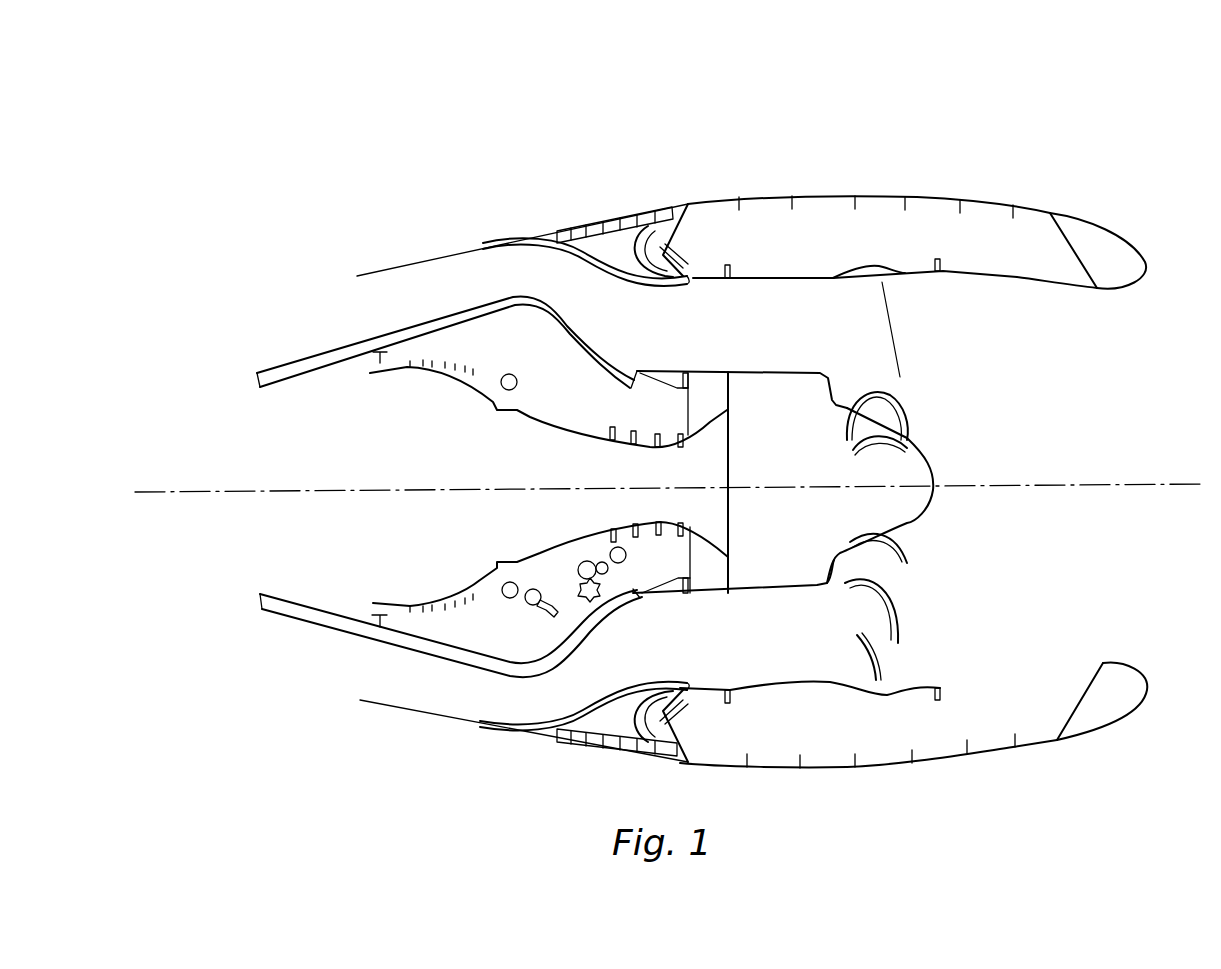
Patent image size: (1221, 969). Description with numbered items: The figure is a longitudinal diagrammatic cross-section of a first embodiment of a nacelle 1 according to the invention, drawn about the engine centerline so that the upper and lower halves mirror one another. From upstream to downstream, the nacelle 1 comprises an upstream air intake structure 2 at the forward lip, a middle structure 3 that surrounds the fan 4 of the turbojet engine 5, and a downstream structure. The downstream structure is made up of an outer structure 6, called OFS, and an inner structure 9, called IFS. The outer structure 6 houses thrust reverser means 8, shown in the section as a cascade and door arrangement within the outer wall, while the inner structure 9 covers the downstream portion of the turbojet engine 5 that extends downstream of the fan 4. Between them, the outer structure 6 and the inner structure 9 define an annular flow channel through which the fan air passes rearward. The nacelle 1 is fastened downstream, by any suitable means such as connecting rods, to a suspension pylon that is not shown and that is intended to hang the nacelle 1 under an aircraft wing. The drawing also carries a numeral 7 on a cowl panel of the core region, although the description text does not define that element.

The nacelle 1 is at (1037, 172).
The upstream air intake structure 2 is at (1113, 222).
The middle structure 3 is at (810, 195).
The fan 4 is at (818, 548).
The turbojet engine 5 is at (548, 495).
The outer structure 6 is at (445, 210).
The core cowl panel 7 is at (372, 333).
The thrust reverser means 8 is at (663, 206).
The inner structure 9 is at (388, 270).